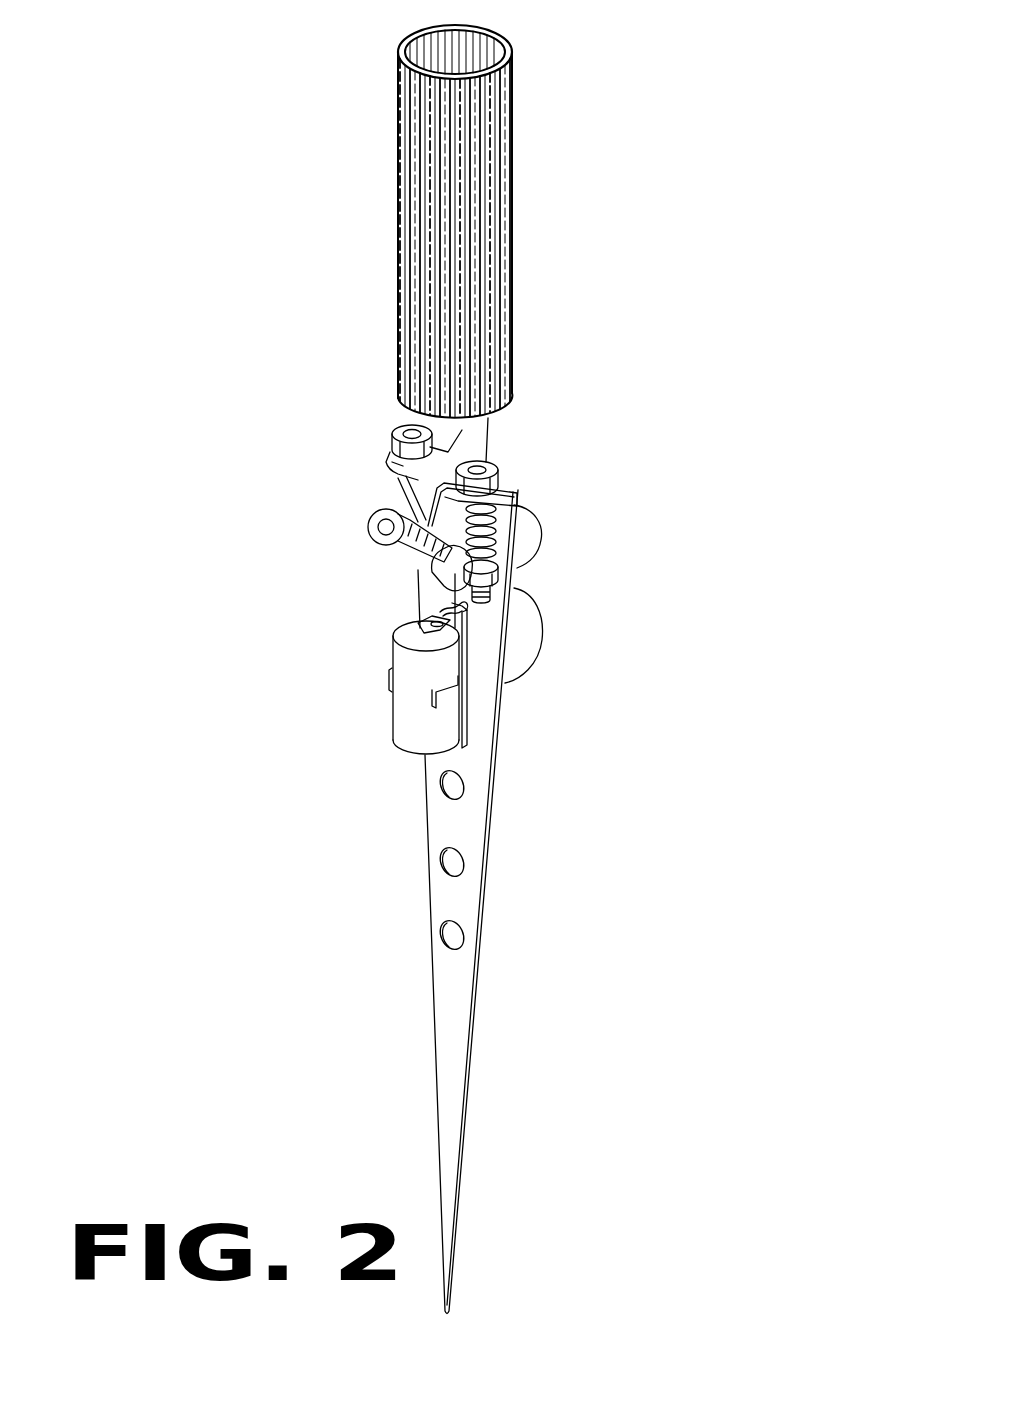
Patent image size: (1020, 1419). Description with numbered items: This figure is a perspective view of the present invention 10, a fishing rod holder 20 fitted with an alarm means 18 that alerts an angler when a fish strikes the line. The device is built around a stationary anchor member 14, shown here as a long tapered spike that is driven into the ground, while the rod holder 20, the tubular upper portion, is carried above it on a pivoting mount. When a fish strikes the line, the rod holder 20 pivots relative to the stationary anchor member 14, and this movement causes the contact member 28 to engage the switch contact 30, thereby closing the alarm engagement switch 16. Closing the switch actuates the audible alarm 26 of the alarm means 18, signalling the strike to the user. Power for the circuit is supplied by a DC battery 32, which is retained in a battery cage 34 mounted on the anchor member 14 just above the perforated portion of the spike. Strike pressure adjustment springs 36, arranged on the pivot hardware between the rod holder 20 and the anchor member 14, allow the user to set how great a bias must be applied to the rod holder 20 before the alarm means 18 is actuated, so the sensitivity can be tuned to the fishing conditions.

The present invention 10 is at (772, 152).
The stationary anchor member 14 is at (476, 955).
The alarm engagement switch 16 is at (345, 446).
The alarm means 18 is at (523, 643).
The fishing rod holder 20 is at (508, 243).
The audible alarm 26 is at (542, 523).
The contact member 28 is at (418, 563).
The switch contact 30 is at (446, 581).
The DC battery 32 is at (410, 700).
The battery cage 34 is at (467, 690).
The strike pressure adjustment springs 36 is at (494, 515).